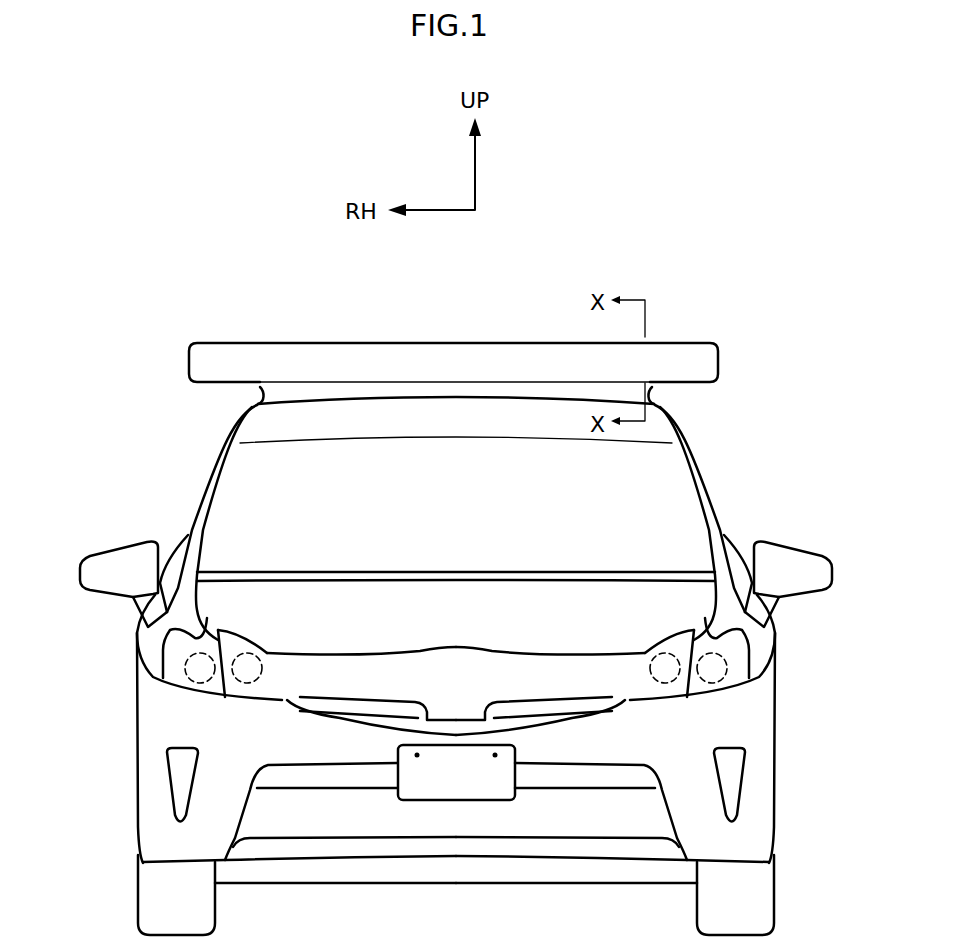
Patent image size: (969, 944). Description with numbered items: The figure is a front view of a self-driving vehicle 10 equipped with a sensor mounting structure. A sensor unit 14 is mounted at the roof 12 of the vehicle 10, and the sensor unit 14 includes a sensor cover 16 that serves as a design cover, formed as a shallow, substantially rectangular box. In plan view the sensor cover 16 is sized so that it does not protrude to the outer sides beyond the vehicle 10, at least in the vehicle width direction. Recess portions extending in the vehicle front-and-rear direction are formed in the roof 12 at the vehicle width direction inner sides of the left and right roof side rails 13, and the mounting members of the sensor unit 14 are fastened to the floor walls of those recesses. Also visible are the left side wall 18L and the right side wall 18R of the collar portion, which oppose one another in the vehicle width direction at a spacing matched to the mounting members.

The vehicle 10 is at (192, 310).
The roof 12 is at (367, 396).
The roof side rails 13 is at (245, 404).
The sensor unit 14 is at (186, 385).
The sensor cover 16 is at (720, 364).
The left side wall 18L is at (654, 388).
The right side wall 18R is at (255, 388).